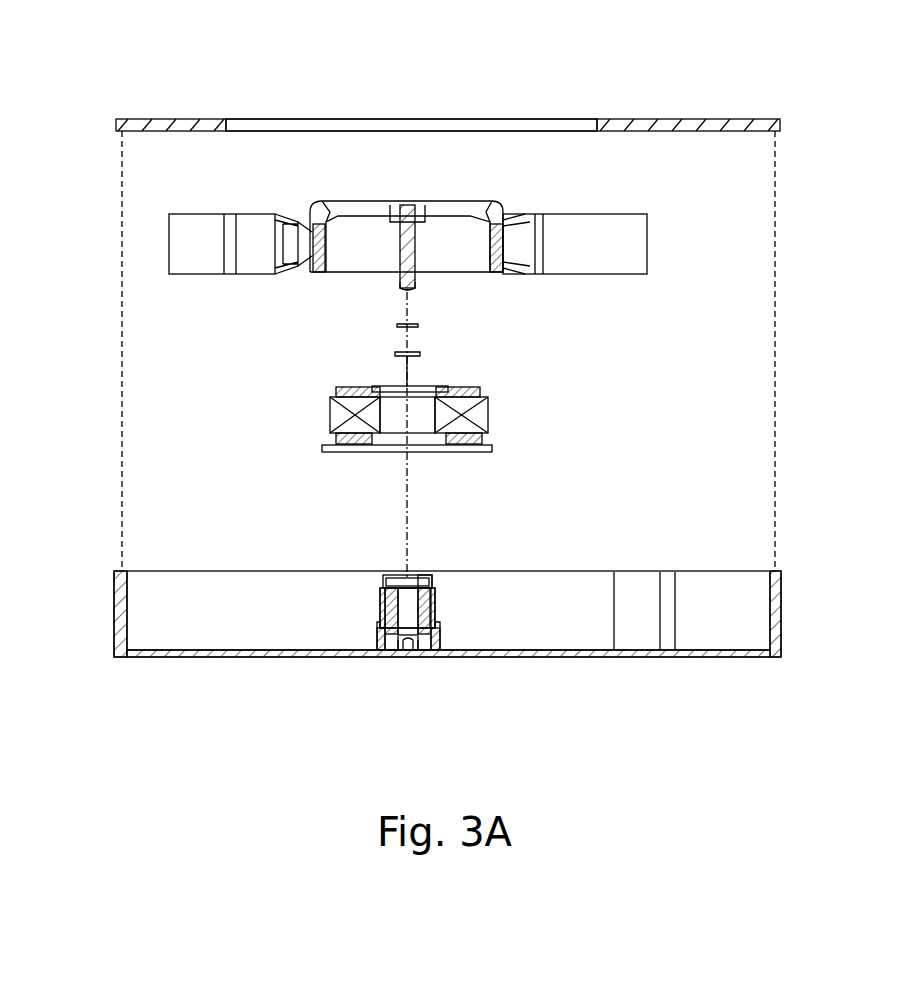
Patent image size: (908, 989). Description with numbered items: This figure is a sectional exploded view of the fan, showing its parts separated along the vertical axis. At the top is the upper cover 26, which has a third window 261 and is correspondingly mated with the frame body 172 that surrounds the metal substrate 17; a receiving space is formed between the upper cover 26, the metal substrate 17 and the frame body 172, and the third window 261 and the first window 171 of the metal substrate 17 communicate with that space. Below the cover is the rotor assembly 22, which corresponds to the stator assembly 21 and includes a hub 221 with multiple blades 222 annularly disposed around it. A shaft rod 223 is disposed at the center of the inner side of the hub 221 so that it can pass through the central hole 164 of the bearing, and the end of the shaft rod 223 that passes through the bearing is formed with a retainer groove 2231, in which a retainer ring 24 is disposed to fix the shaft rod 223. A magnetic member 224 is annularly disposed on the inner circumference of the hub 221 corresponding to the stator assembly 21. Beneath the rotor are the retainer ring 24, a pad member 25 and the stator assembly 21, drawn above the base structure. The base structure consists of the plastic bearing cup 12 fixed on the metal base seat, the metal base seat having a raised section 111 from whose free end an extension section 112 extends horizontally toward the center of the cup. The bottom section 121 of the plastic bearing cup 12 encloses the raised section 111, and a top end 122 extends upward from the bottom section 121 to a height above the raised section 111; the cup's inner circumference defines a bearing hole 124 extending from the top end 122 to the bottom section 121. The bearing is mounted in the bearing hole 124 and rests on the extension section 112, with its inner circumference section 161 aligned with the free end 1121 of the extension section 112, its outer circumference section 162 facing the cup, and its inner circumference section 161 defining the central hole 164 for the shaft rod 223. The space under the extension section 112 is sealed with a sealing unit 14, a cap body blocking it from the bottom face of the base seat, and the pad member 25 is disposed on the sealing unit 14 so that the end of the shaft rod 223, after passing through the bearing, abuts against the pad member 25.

The upper cover 26 is at (712, 118).
The third window 261 is at (578, 122).
The rotor assembly 22 is at (339, 231).
The hub 221 is at (335, 213).
The blades 222 is at (185, 248).
The shaft rod 223 is at (395, 232).
The retainer groove 2231 is at (396, 284).
The magnetic member 224 is at (330, 258).
The retainer ring 24 is at (420, 326).
The pad member 25 is at (420, 353).
The stator assembly 21 is at (522, 414).
The plastic bearing cup 12 is at (380, 600).
The bottom section 121 is at (377, 630).
The top end 122 is at (385, 572).
The bearing hole 124 is at (425, 574).
The inner circumference section 161 is at (402, 577).
The outer circumference section 162 is at (390, 574).
The central hole 164 is at (410, 576).
The raised section 111 is at (390, 656).
The extension section 112 is at (404, 652).
The free end 1121 is at (412, 652).
The sealing unit 14 is at (420, 655).
The metal substrate 17 is at (498, 652).
The first window 171 is at (553, 658).
The frame body 172 is at (780, 628).